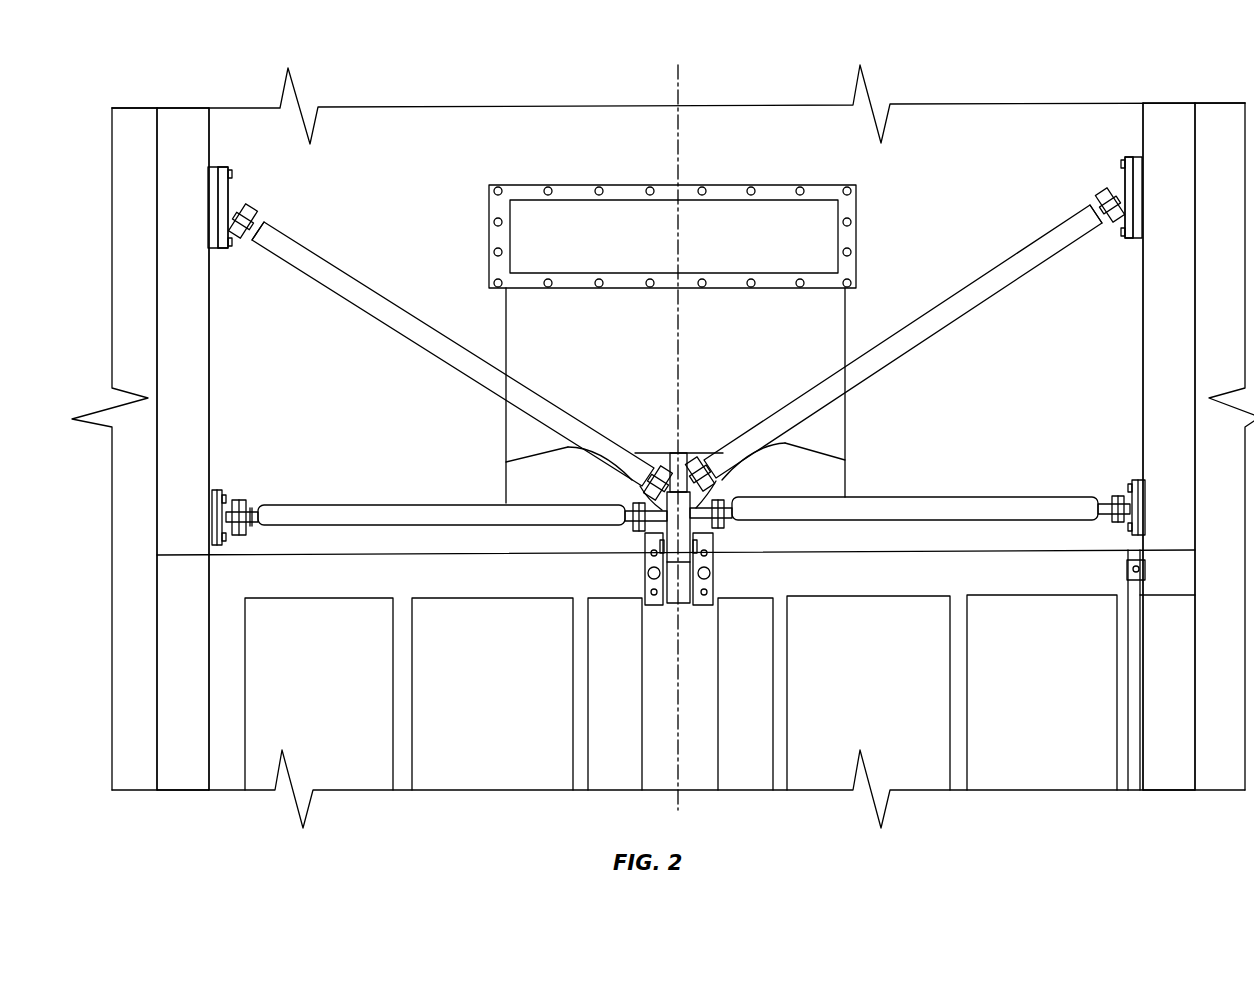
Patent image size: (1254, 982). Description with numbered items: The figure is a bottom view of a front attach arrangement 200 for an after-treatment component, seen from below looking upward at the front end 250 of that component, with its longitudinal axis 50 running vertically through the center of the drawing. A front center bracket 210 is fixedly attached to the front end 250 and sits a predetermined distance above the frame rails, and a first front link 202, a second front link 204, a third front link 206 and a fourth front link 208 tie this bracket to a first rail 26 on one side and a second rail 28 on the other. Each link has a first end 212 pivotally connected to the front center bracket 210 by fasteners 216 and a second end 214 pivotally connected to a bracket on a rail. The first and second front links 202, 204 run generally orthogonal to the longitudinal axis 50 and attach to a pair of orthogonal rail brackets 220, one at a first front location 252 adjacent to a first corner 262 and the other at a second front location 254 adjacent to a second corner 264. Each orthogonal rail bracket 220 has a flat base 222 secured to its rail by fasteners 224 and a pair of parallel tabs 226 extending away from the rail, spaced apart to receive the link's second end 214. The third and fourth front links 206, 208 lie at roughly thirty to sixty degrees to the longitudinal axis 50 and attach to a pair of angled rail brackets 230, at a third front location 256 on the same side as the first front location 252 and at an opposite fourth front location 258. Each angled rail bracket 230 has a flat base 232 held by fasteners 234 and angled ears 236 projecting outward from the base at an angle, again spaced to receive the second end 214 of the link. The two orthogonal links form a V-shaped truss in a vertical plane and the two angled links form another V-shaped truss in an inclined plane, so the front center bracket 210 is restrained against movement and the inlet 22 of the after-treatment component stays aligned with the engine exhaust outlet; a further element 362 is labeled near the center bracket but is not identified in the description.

The front attach arrangement 200 is at (445, 90).
The longitudinal axis 50 is at (680, 72).
The inlet 22 is at (815, 213).
The first rail 26 is at (178, 200).
The second rail 28 is at (1172, 192).
The first front link 202 is at (345, 510).
The second front link 204 is at (930, 498).
The third front link 206 is at (380, 302).
The fourth front link 208 is at (990, 298).
The front center bracket 210 is at (684, 593).
The first end 212 is at (636, 484).
The second end 214 is at (262, 222).
The fasteners 216 is at (244, 214).
The orthogonal rail bracket 220 is at (212, 510).
The base 222 is at (217, 490).
The fasteners 224 is at (224, 532).
The tabs 226 is at (256, 510).
The angled rail bracket 230 is at (215, 210).
The base 232 is at (218, 167).
The fasteners 234 is at (232, 172).
The angled ears 236 is at (270, 228).
The front end 250 is at (780, 545).
The first front location 252 is at (210, 527).
The second front location 254 is at (1158, 510).
The third front location 256 is at (207, 178).
The fourth front location 258 is at (1145, 172).
The first corner 262 is at (183, 555).
The second corner 264 is at (1145, 553).
The hub connector 362 is at (718, 495).